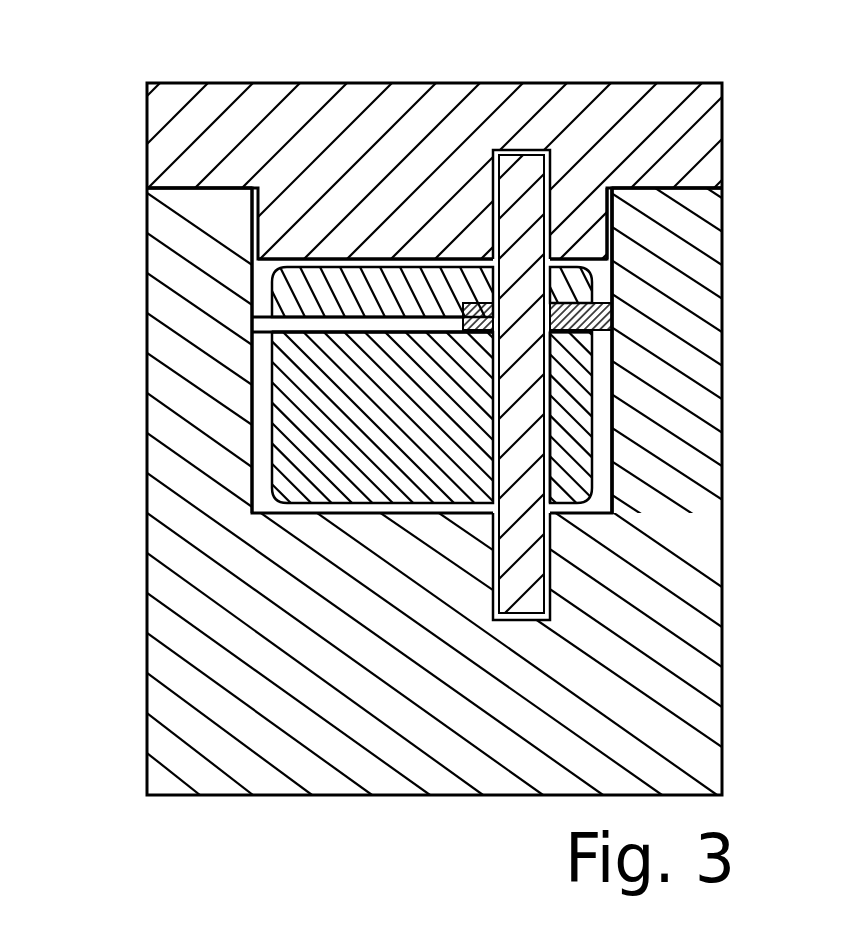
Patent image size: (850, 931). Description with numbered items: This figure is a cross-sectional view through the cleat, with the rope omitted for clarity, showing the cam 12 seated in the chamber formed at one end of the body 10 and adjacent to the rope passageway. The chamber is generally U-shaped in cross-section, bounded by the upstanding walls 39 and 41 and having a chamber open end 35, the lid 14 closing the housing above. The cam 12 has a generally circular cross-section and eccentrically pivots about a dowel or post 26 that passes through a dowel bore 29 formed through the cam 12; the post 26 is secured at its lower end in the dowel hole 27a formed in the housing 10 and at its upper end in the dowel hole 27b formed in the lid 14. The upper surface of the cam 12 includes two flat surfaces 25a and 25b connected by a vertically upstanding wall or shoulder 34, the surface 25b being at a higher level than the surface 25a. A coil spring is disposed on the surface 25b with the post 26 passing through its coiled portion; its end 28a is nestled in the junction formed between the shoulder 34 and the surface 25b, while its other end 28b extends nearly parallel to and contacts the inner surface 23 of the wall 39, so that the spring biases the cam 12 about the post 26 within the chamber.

The body 10 is at (703, 563).
The cam 12 is at (305, 460).
The lid 14 is at (337, 112).
The inner surface 23 is at (605, 289).
The flat surface 25a is at (350, 335).
The flat surface 25b is at (387, 258).
The post 26 is at (547, 608).
The dowel hole 27a is at (553, 577).
The dowel hole 27b is at (563, 115).
The spring end 28a is at (273, 325).
The spring end 28b is at (613, 311).
The dowel bore 29 is at (553, 442).
The shoulder 34 is at (290, 296).
The chamber open end 35 is at (603, 273).
The wall 39 is at (690, 375).
The wall 41 is at (173, 352).